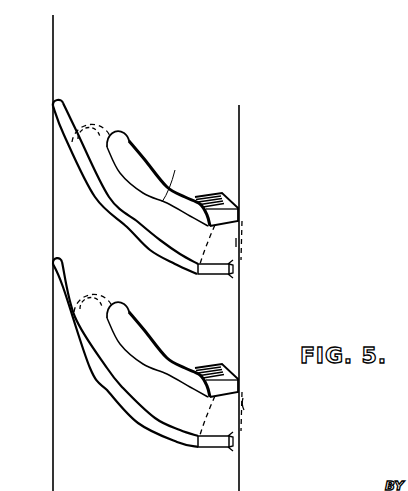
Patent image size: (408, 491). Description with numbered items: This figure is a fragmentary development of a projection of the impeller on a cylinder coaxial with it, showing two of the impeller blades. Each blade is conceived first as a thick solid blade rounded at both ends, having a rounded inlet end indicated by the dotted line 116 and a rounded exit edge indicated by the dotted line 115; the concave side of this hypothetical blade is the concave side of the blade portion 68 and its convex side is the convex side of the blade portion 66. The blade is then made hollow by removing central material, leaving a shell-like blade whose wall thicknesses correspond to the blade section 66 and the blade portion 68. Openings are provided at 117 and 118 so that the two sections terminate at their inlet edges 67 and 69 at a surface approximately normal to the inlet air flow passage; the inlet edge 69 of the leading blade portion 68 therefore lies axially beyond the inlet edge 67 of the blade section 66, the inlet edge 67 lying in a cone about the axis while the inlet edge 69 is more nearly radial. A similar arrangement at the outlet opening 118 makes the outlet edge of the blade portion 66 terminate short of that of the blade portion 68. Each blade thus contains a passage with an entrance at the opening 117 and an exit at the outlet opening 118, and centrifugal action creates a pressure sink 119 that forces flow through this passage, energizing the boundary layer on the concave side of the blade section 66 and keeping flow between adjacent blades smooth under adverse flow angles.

The blade section 66 is at (152, 260).
The inlet edge 67 is at (64, 132).
The blade portion 68 is at (146, 168).
The inlet edge 69 is at (116, 131).
The rounded exit edge 115 is at (244, 408).
The rounded inlet end 116 is at (86, 294).
The opening 117 is at (99, 145).
The outlet opening 118 is at (232, 243).
The pressure sink 119 is at (179, 177).